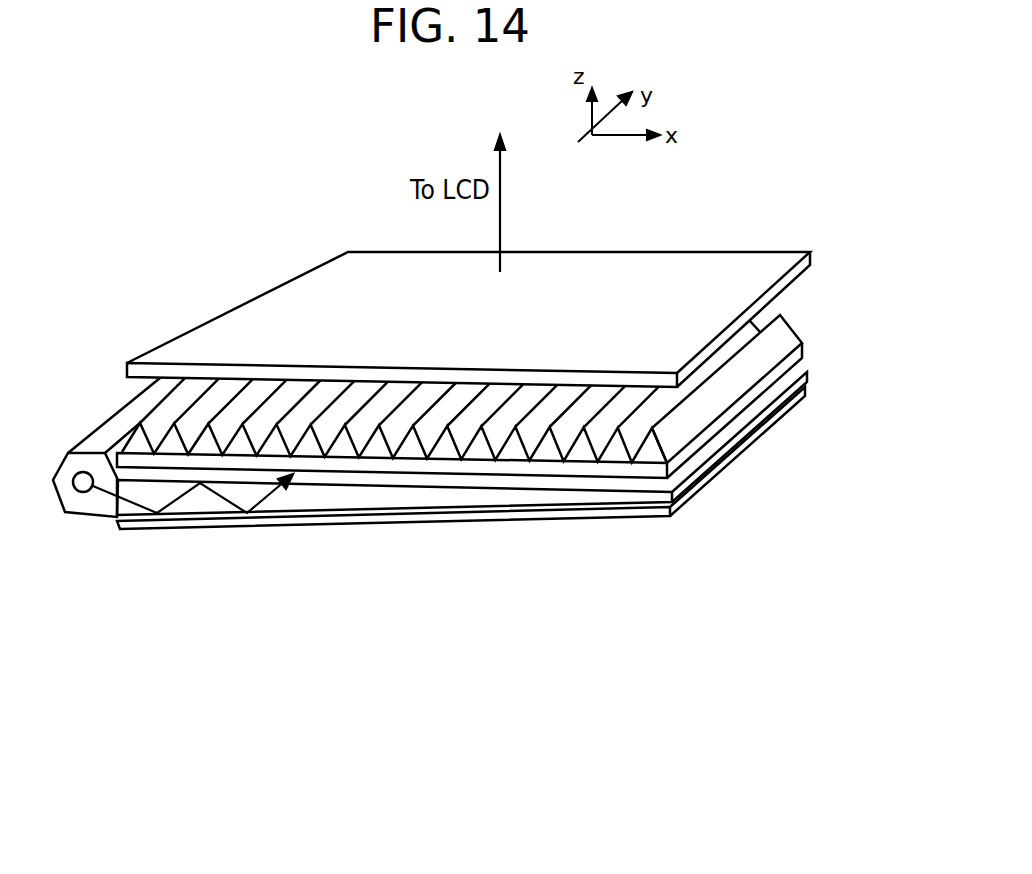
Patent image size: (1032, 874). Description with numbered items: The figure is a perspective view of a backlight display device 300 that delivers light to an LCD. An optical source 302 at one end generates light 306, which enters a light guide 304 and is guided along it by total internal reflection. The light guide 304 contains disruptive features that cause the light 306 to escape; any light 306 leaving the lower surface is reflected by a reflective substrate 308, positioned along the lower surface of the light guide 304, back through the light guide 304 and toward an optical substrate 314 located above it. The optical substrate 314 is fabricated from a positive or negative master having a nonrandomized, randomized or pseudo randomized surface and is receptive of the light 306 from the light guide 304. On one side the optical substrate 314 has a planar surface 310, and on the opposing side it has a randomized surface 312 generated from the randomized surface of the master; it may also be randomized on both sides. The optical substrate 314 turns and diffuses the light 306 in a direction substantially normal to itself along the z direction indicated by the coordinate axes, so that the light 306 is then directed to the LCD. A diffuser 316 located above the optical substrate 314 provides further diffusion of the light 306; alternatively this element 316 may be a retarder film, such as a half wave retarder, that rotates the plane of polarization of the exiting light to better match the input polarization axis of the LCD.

The backlight display device 300 is at (261, 691).
The optical source 302 is at (80, 472).
The light guide 304 is at (182, 505).
The light 306 is at (282, 505).
The reflective substrate 308 is at (342, 527).
The planar surface 310 is at (607, 475).
The randomized surface 312 is at (650, 457).
The optical substrate 314 is at (797, 301).
The diffuser 316 is at (630, 280).